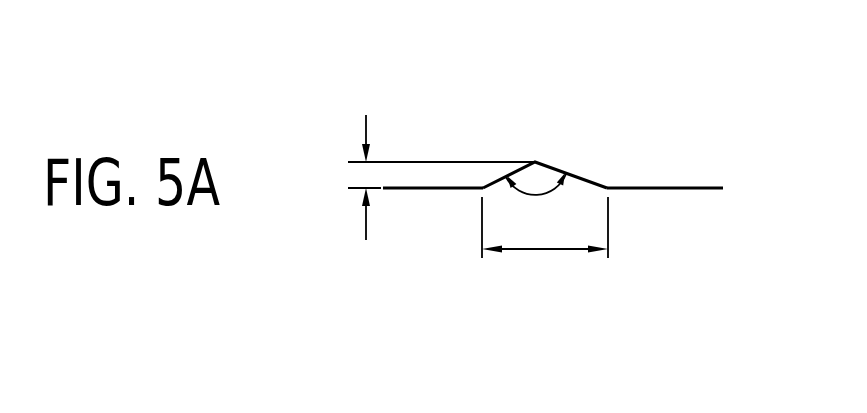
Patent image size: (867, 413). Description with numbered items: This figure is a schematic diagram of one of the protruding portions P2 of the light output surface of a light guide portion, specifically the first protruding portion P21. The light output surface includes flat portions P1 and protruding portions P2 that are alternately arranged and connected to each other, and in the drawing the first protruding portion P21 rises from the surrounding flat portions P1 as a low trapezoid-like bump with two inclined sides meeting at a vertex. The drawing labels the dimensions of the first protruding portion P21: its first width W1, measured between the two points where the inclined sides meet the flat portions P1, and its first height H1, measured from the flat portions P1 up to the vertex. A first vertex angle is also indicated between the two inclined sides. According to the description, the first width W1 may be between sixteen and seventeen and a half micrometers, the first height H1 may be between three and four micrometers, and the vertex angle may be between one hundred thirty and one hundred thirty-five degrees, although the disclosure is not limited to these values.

The flat portion P1 is at (652, 188).
The protruding portion P2 is at (570, 96).
The first protruding portion P21 is at (545, 175).
The first height H1 is at (441, 177).
The first width W1 is at (545, 227).